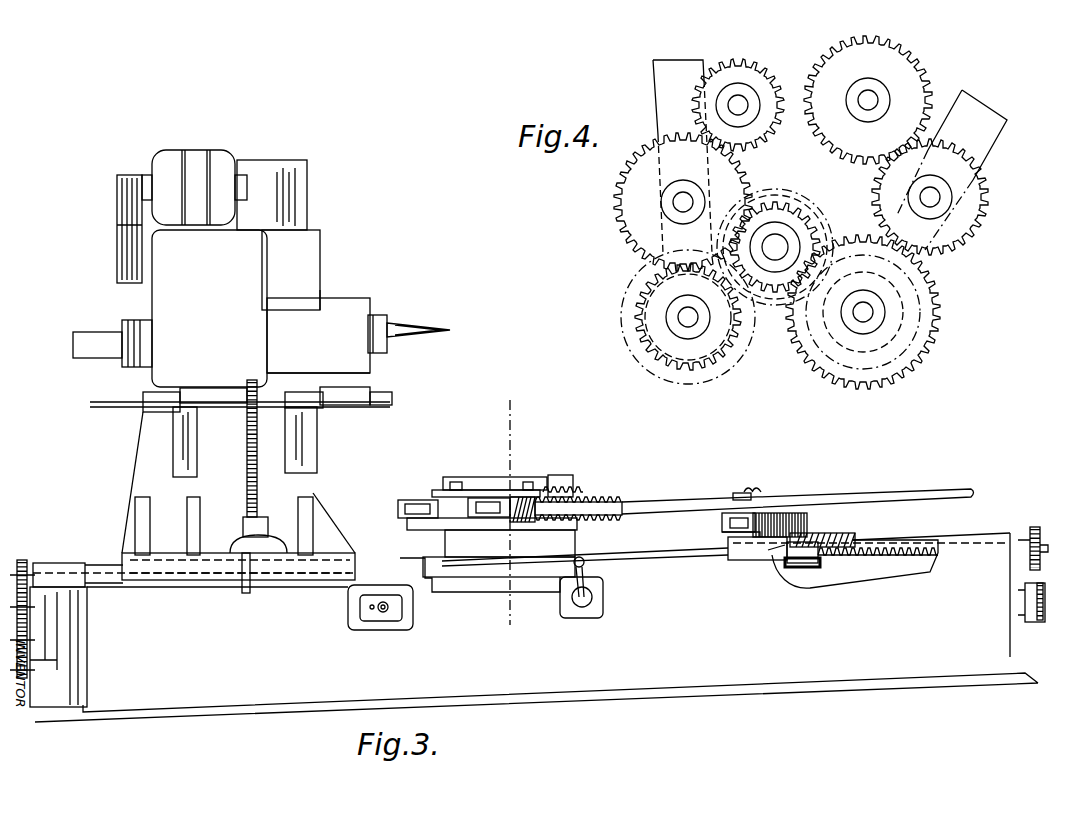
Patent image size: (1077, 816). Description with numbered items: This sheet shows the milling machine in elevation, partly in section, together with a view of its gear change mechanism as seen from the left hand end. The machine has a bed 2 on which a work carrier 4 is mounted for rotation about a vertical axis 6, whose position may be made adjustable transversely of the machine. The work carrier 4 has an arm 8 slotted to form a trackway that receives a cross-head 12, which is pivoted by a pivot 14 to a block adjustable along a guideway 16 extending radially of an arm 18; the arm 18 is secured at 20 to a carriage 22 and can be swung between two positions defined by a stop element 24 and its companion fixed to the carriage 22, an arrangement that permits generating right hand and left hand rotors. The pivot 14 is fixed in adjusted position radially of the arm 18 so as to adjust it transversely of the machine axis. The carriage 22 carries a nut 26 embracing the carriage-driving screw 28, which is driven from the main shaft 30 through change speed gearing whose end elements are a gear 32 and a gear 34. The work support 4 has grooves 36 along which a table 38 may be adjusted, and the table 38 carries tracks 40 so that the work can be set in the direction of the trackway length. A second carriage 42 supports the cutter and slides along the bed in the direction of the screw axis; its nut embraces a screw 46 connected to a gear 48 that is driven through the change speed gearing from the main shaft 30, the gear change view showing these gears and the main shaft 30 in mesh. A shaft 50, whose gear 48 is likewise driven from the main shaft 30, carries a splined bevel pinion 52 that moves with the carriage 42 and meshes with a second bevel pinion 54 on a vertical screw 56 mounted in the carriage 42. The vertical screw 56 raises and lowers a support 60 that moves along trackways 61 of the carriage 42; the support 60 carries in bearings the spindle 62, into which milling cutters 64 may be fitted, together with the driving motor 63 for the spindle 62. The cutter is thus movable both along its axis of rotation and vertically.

In FIG. 3, the bed 2 is at (845, 646).
In FIG. 3, the work carrier 4 is at (613, 495).
In FIG. 3, the vertical axis 6 is at (514, 424).
In FIG. 3, the arm 8 is at (897, 495).
In FIG. 3, the cross-head 12 is at (736, 493).
In FIG. 3, the pivot 14 is at (756, 484).
In FIG. 3, the guideway 16 is at (722, 519).
In FIG. 3, the arm 18 is at (723, 540).
In FIG. 3, the securing point 20 is at (797, 512).
In FIG. 3, the carriage 22 is at (845, 535).
In FIG. 3, the stop element 24 is at (772, 528).
In FIG. 3, the nut 26 is at (806, 568).
In FIG. 3, the carriage-driving screw 28 is at (893, 547).
In FIG. 4, the main shaft 30 is at (781, 244).
In FIG. 3, the main shaft 30 is at (1047, 597).
In FIG. 3, the change speed gear end element 32 is at (1033, 622).
In FIG. 3, the change speed gear end element 34 is at (1032, 530).
In FIG. 3, the grooves 36 is at (417, 503).
In FIG. 3, the table 38 is at (580, 488).
In FIG. 3, the tracks 40 is at (560, 478).
In FIG. 3, the carriage 42 is at (293, 490).
In FIG. 4, the screw 46 is at (742, 101).
In FIG. 4, the gear 48 is at (912, 78).
In FIG. 3, the gear 48 is at (21, 565).
In FIG. 4, the shaft 50 is at (870, 97).
In FIG. 3, the shaft 50 is at (113, 587).
In FIG. 3, the bevel pinion 52 is at (249, 592).
In FIG. 3, the bevel pinion 54 is at (273, 568).
In FIG. 3, the vertical screw 56 is at (247, 474).
In FIG. 3, the support 60 is at (193, 320).
In FIG. 3, the trackways 61 is at (300, 197).
In FIG. 3, the spindle 62 is at (376, 313).
In FIG. 3, the driving motor 63 is at (215, 162).
In FIG. 3, the milling cutter 64 is at (415, 326).